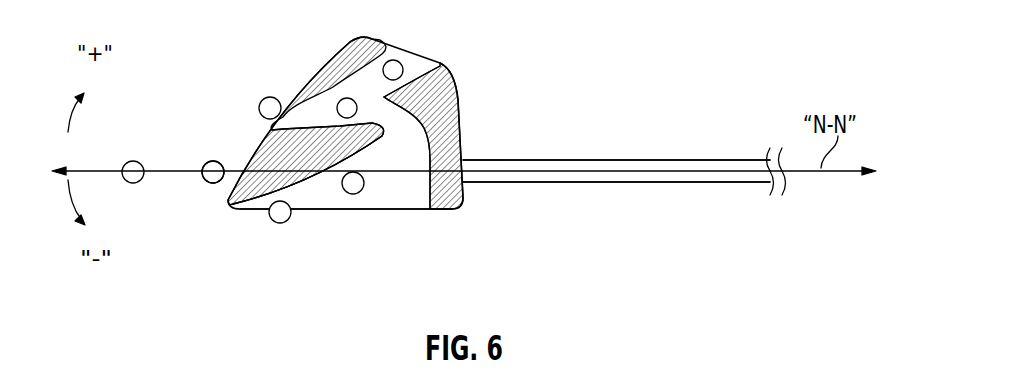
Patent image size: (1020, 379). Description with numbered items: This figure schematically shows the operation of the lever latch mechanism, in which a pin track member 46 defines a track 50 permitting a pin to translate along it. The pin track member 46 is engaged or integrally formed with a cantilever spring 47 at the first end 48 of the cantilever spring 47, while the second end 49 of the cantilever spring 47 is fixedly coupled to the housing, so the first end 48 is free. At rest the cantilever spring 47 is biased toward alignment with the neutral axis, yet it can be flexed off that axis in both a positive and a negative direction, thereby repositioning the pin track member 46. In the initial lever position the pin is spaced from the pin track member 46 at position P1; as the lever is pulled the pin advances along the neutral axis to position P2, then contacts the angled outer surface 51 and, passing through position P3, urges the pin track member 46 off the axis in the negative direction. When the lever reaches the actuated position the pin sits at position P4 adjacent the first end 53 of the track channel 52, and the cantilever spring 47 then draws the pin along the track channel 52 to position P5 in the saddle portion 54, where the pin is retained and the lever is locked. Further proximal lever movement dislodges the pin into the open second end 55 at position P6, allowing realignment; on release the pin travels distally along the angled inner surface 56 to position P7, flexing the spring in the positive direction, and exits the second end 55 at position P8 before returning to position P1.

The pin track member 46 is at (446, 95).
The cantilever spring 47 is at (603, 167).
The first end 48 is at (485, 173).
The second end 49 is at (750, 162).
The track 50 is at (405, 181).
The outer surface 51 is at (305, 84).
The track channel 52 is at (375, 82).
The first end 53 is at (420, 69).
The saddle portion 54 is at (336, 128).
The second end 55 is at (349, 208).
The inner surface 56 is at (322, 177).
The position P1 is at (125, 164).
The position P2 is at (205, 164).
The position P3 is at (262, 100).
The position P4 is at (400, 63).
The position P5 is at (340, 101).
The position P6 is at (360, 193).
The position P7 is at (278, 223).
The position P8 is at (205, 180).